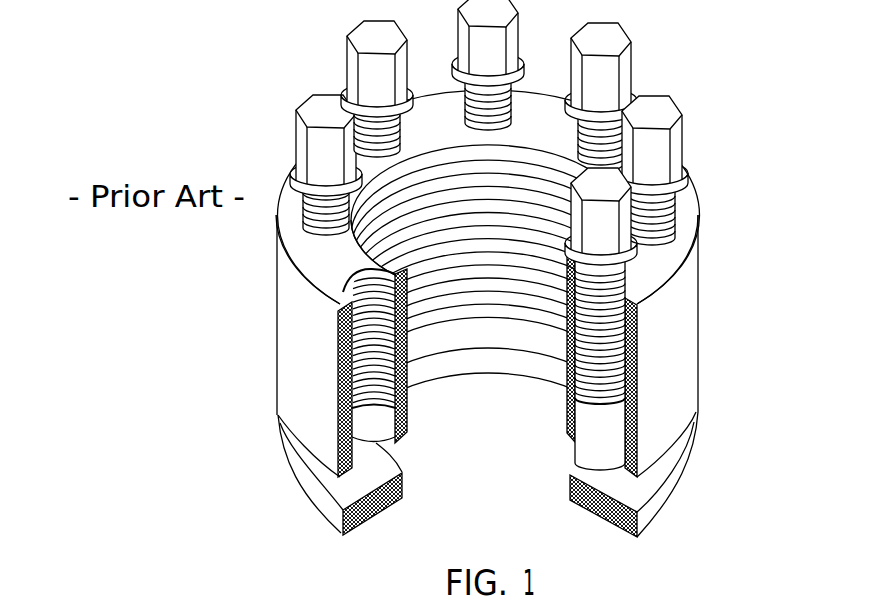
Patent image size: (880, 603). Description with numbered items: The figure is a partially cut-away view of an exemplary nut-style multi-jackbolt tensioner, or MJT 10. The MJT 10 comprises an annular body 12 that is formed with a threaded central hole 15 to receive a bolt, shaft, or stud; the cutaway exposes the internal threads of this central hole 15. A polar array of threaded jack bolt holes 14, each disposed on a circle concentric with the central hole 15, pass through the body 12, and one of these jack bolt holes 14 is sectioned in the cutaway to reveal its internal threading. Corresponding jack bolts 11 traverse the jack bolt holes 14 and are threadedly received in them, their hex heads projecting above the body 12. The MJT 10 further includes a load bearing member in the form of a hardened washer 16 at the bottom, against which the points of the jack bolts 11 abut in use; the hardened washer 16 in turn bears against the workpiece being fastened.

The nut-style MJT 10 is at (258, 63).
The jack bolt 11 is at (661, 116).
The annular body 12 is at (673, 382).
The jack bolt hole 14 is at (372, 418).
The threaded central hole 15 is at (464, 210).
The hardened washer 16 is at (647, 503).